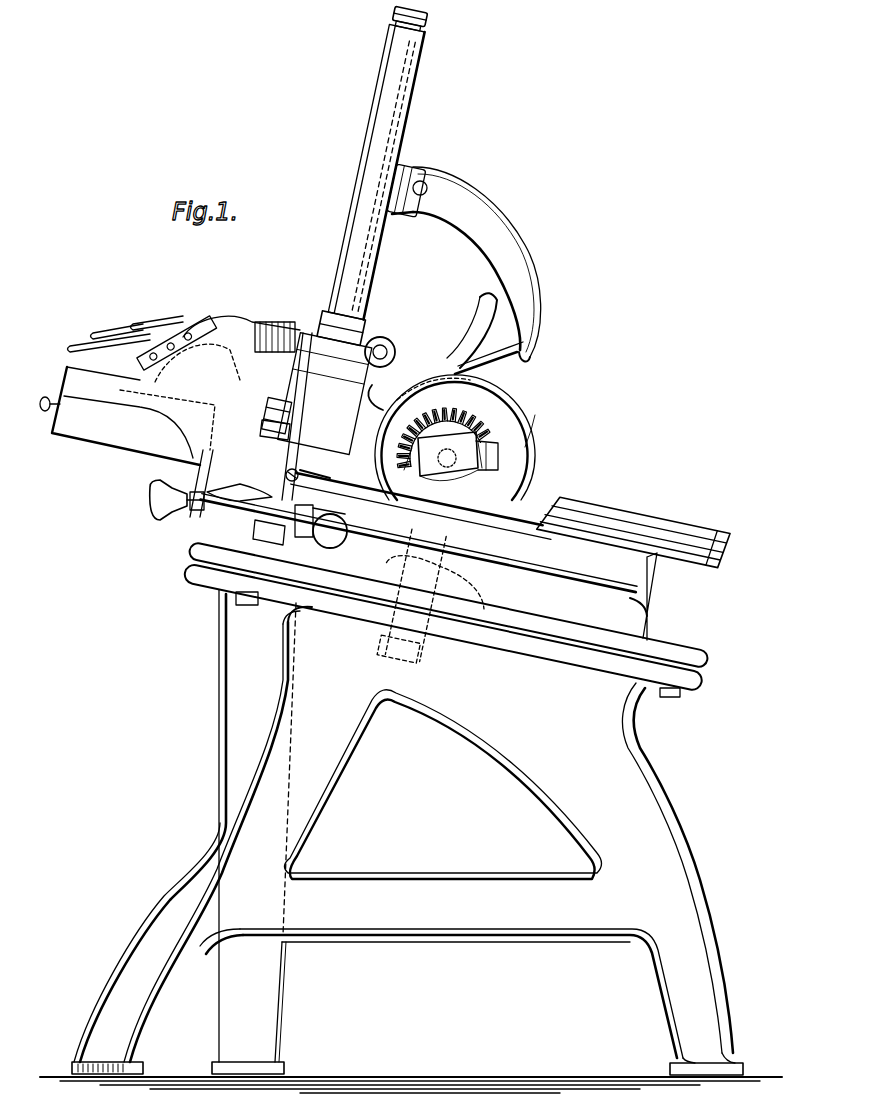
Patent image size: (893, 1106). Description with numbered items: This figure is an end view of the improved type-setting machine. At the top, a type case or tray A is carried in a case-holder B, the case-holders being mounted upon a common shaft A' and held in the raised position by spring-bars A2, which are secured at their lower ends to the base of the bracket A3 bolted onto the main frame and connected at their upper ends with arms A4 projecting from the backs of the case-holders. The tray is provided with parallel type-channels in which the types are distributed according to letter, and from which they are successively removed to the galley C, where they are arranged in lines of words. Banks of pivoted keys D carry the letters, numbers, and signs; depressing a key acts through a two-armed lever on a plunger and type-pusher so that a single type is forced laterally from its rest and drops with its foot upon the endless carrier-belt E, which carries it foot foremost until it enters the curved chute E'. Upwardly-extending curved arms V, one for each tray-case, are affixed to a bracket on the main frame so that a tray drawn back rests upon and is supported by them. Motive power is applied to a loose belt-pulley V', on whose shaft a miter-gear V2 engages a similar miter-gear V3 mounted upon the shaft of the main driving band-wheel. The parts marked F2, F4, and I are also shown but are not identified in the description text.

The type case or tray A is at (411, 665).
The case-holder B is at (411, 116).
The galley C is at (456, 582).
The pivoted key D is at (170, 387).
The endless carrier-belt E is at (317, 416).
The curved chute E' is at (286, 417).
The common shaft A' is at (396, 274).
The spring-bar A2 is at (505, 380).
The bracket A3 is at (381, 389).
The arm A4 is at (528, 249).
The curved arm V is at (485, 333).
The loose belt-pulley V' is at (541, 436).
The miter-gear V2 is at (453, 444).
The miter-gear V3 is at (425, 401).
The bracket F2 is at (278, 522).
The knob F4 is at (193, 513).
The block I is at (321, 526).